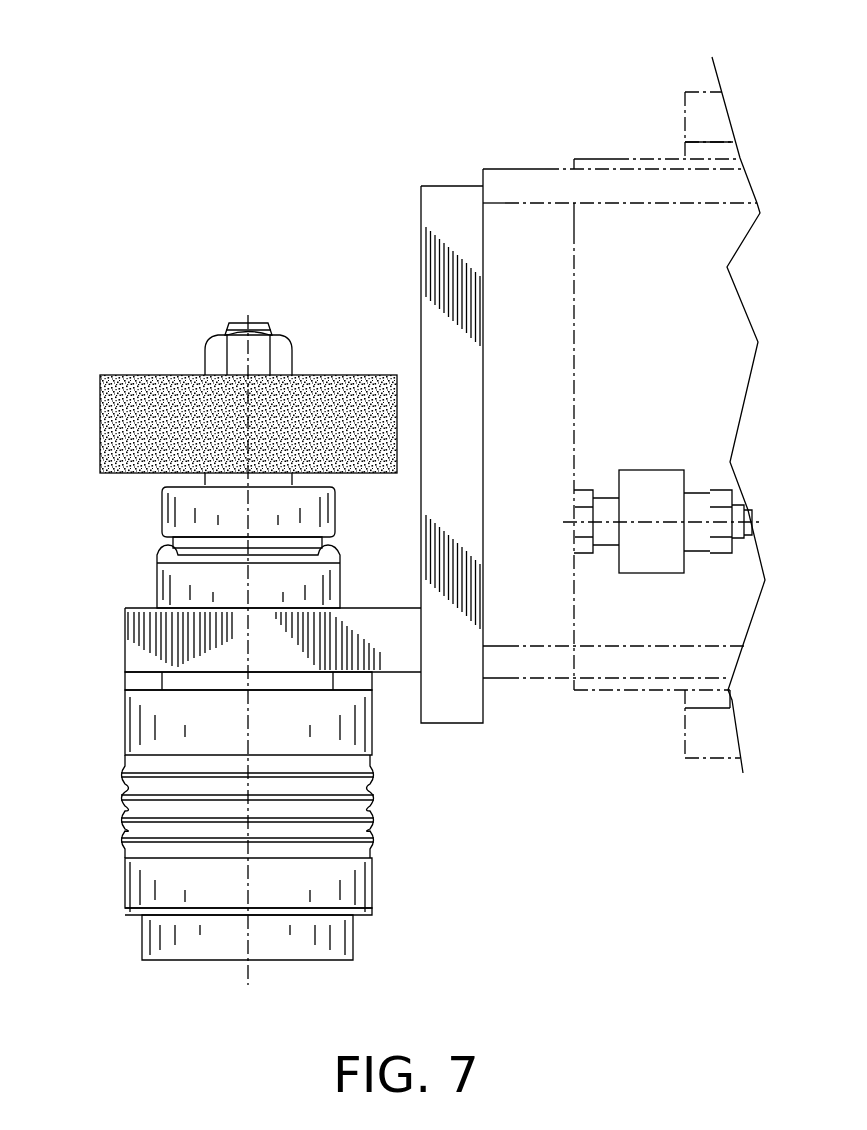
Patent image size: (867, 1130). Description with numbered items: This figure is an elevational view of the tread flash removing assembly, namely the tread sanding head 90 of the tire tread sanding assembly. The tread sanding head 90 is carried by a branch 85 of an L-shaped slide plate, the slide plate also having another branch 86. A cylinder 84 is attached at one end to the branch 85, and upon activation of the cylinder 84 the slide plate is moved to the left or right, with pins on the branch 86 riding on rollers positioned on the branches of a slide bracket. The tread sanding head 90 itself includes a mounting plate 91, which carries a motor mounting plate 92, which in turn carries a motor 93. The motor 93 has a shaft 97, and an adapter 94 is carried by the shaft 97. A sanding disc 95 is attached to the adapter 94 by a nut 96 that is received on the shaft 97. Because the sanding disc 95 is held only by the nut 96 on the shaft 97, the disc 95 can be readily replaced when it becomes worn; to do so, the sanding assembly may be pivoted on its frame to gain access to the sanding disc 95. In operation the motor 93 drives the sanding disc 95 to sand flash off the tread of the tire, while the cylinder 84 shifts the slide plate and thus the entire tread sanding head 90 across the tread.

The tread sanding head 90 is at (207, 131).
The mounting plate 91 is at (450, 700).
The motor mounting plate 92 is at (140, 650).
The motor 93 is at (175, 883).
The adapter 94 is at (175, 507).
The sanding disc 95 is at (135, 425).
The nut 96 is at (205, 355).
The shaft 97 is at (267, 322).
The cylinder 84 is at (650, 492).
The branch of slide plate 85 is at (534, 225).
The branch of slide plate 86 is at (652, 238).